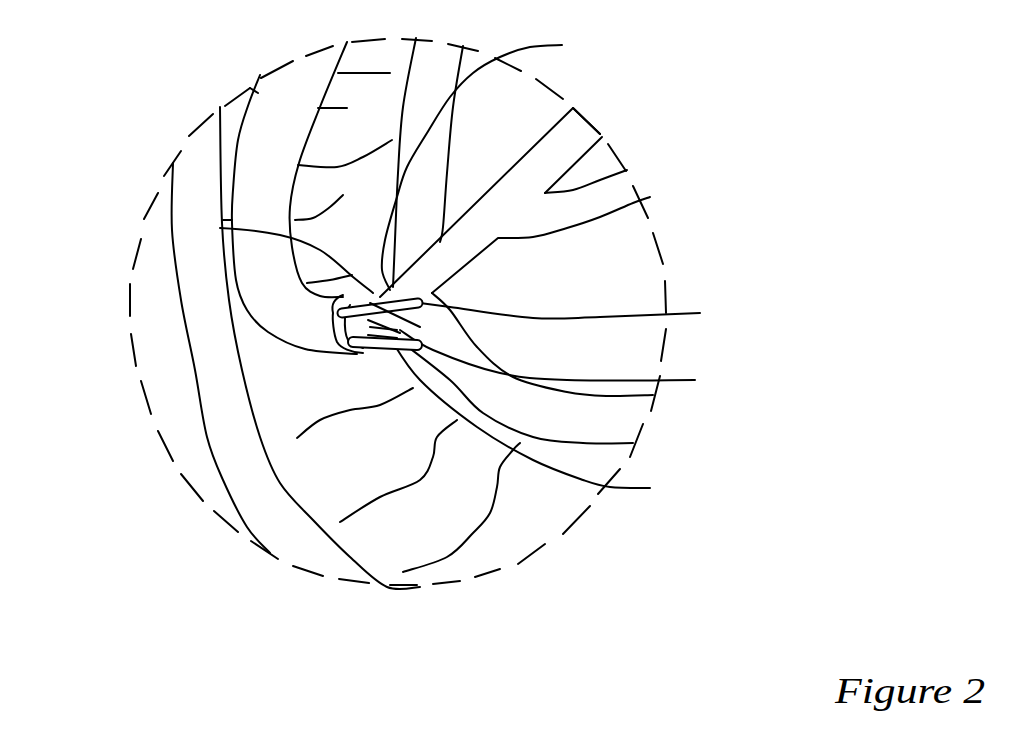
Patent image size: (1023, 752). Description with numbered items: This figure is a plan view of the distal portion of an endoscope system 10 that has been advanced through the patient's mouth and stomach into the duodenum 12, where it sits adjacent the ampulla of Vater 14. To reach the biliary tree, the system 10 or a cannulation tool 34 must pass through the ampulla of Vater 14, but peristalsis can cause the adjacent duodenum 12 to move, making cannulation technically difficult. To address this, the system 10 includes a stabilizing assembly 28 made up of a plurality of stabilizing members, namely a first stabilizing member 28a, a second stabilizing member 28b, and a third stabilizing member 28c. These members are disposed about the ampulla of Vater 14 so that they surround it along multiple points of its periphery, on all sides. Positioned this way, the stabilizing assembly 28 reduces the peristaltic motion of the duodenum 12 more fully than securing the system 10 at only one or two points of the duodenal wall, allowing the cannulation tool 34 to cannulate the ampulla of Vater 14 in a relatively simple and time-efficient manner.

The endoscope system 10 is at (243, 108).
The duodenum 12 is at (208, 387).
The ampulla of Vater 14 is at (554, 218).
The stabilizing assembly 28 is at (368, 365).
The first stabilizing member 28a is at (220, 228).
The second stabilizing member 28b is at (541, 420).
The third stabilizing member 28c is at (492, 164).
The cannulation tool 34 is at (562, 363).